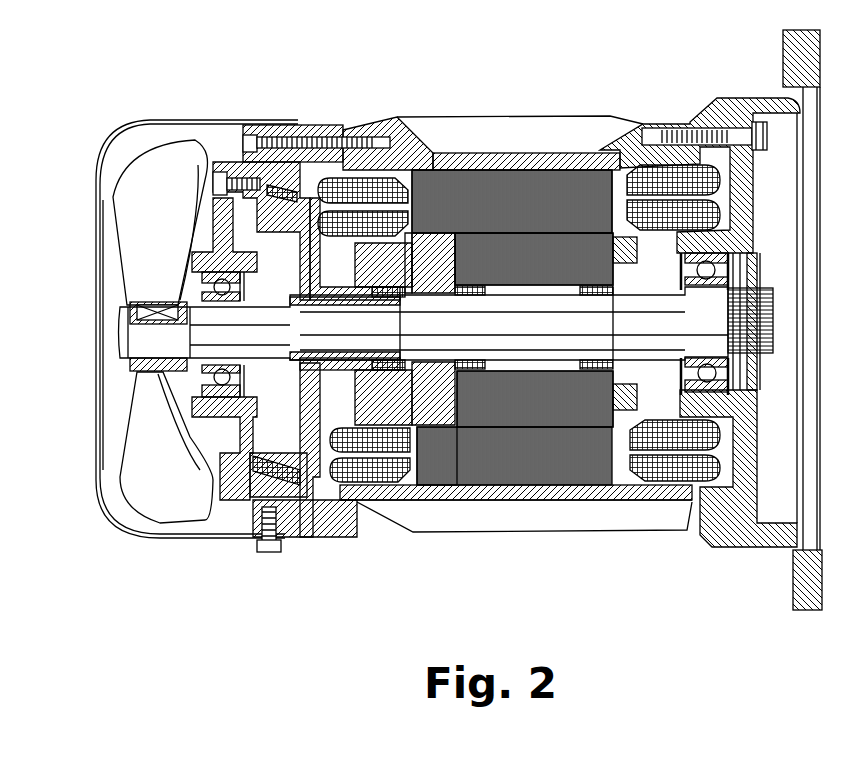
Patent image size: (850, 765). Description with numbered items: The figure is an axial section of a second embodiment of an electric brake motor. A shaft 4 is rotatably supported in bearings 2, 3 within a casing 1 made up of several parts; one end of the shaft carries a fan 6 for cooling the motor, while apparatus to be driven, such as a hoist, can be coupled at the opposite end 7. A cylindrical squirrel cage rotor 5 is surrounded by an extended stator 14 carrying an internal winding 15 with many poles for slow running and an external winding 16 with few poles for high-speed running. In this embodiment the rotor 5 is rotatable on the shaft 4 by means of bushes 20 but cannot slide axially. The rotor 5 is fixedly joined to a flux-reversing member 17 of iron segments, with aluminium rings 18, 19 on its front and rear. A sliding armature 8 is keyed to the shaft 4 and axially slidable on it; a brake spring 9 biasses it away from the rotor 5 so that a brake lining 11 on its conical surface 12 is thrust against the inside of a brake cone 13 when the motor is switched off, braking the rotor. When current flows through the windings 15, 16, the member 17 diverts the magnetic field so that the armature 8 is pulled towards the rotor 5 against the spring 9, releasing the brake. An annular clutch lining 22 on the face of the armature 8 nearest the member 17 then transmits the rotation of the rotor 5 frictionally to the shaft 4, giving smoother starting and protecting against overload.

The casing 1 is at (548, 114).
The bearing 2 is at (230, 287).
The bearing 3 is at (692, 270).
The shaft 4 is at (537, 327).
The squirrel cage rotor 5 is at (553, 393).
The fan 6 is at (140, 430).
The opposite end of the shaft 7 is at (755, 302).
The sliding armature 8 is at (377, 400).
The brake spring 9 is at (394, 300).
The brake lining 11 is at (290, 492).
The conical surface 12 is at (267, 453).
The brake cone 13 is at (300, 535).
The extended stator 14 is at (505, 463).
The internal winding 15 is at (347, 437).
The external winding 16 is at (350, 483).
The flux-reversing member 17 is at (437, 440).
The ring 18 is at (427, 233).
The ring 19 is at (470, 233).
The bushes 20 is at (432, 365).
The annular clutch lining 22 is at (404, 238).